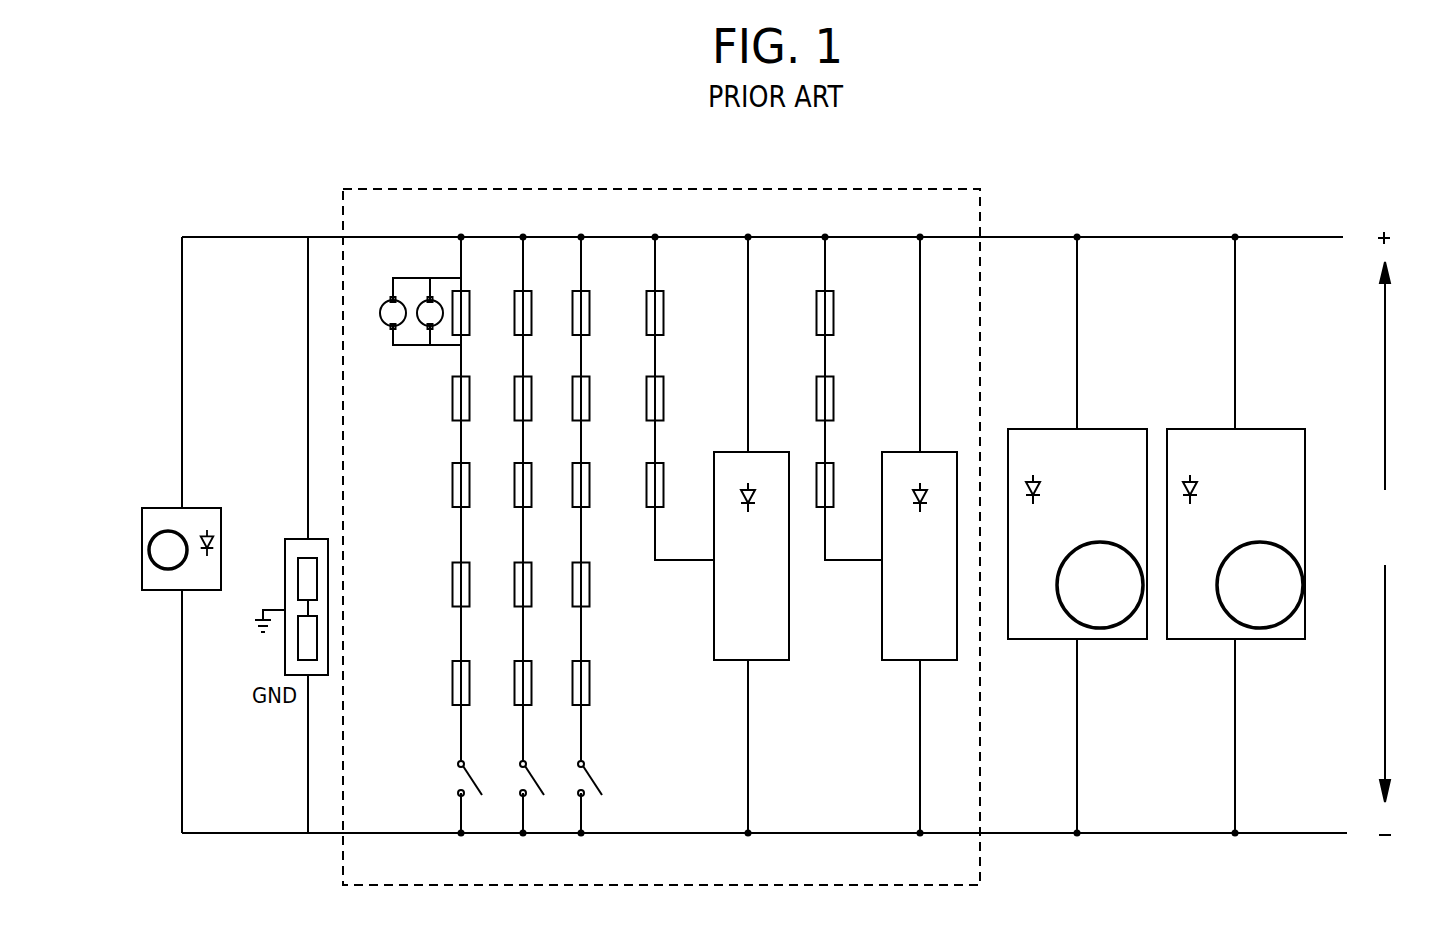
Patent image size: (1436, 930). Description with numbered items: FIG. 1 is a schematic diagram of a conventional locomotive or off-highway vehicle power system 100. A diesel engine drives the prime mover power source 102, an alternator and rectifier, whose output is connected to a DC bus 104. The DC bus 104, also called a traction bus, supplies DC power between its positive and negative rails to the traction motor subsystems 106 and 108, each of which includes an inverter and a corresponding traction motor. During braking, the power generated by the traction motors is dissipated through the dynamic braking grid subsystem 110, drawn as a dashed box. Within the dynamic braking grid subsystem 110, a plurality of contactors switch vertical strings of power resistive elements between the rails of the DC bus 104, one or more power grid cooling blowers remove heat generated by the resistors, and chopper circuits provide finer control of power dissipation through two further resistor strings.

The power system 100 is at (277, 194).
The prime mover power source 102 is at (198, 591).
The DC bus 104 is at (1387, 533).
The traction motor subsystem 106 is at (1045, 640).
The traction motor subsystem 108 is at (1210, 640).
The dynamic braking grid subsystem 110 is at (752, 189).